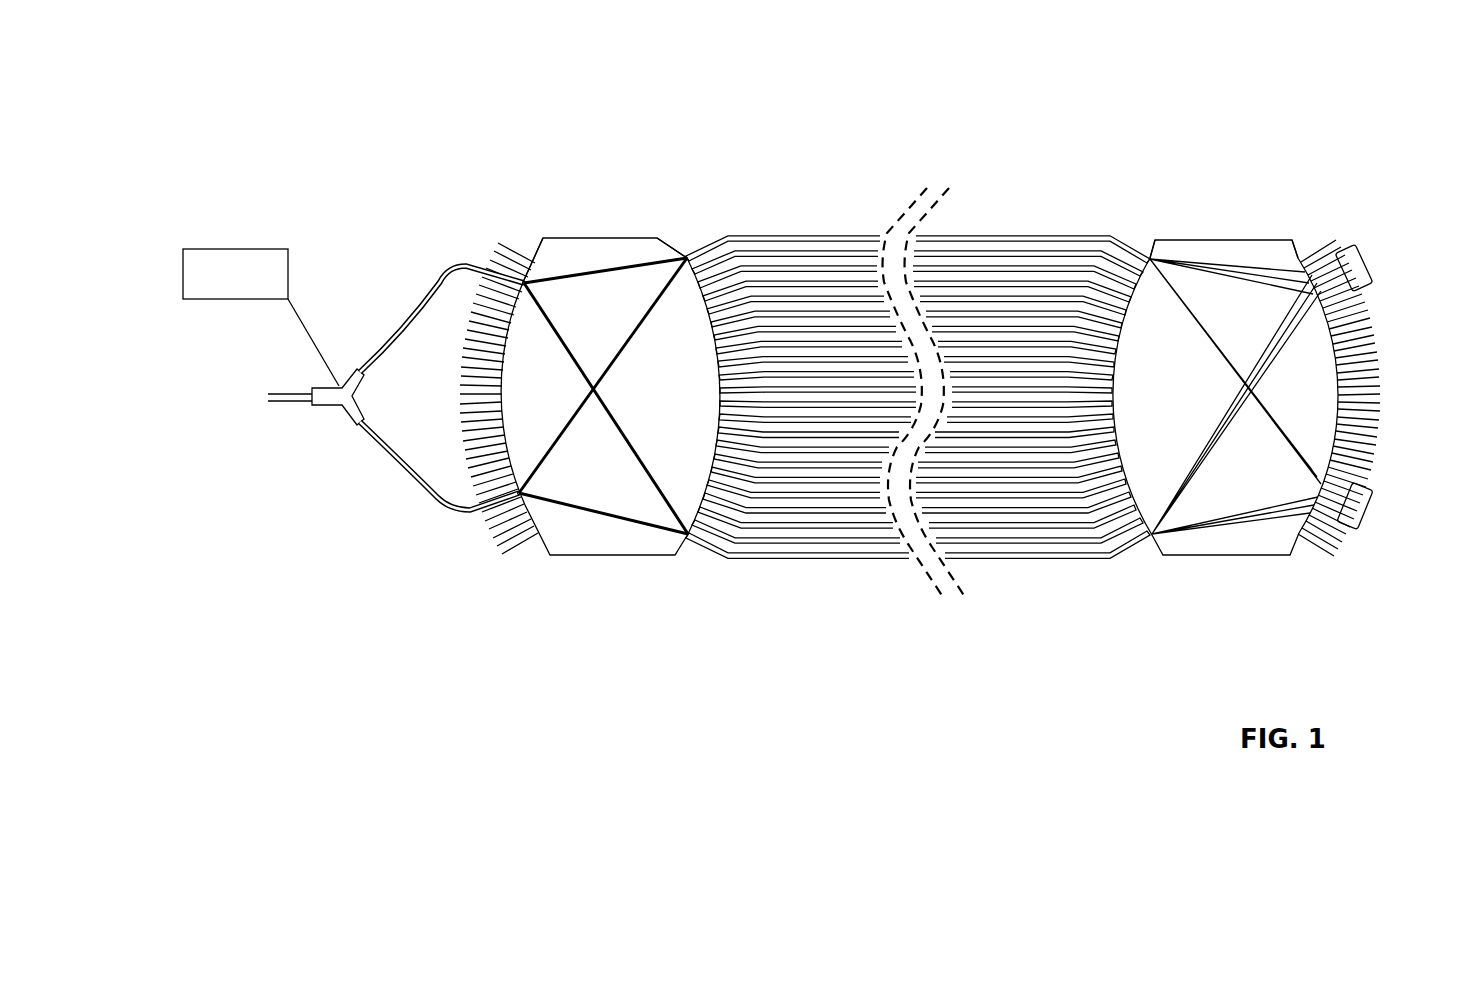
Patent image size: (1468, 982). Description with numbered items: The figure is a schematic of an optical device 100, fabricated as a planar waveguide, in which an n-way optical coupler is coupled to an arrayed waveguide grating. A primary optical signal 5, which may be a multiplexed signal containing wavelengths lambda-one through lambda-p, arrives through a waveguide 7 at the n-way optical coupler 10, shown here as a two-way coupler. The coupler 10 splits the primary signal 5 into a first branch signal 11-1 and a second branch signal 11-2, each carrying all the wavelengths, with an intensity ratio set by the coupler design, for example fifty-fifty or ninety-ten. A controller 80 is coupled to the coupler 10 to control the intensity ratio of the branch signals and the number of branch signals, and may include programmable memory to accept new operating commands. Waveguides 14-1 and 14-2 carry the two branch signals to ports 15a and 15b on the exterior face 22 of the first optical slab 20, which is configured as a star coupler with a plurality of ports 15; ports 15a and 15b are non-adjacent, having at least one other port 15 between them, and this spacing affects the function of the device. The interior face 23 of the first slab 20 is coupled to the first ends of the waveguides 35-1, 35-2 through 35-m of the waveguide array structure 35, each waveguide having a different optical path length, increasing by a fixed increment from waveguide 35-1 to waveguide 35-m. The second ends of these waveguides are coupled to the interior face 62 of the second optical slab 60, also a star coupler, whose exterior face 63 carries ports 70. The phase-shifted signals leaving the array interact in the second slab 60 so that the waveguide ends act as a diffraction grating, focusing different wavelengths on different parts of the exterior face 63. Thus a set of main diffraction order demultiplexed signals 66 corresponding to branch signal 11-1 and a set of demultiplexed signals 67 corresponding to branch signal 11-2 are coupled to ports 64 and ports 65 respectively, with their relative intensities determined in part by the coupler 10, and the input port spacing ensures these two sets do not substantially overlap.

The optical device 100 is at (456, 106).
The controller 80 is at (202, 246).
The primary optical signal 5 is at (301, 380).
The waveguide 7 is at (270, 400).
The n-way optical coupler 10 is at (320, 407).
The first branch signal 11-1 is at (402, 296).
The second branch signal 11-2 is at (373, 445).
The first waveguide 14-1 is at (449, 263).
The second waveguide 14-2 is at (452, 516).
The ports 15 is at (452, 338).
The first port 15a is at (521, 292).
The second port 15b is at (518, 485).
The first optical slab 20 is at (607, 590).
The exterior face 22 is at (546, 242).
The interior face 23 is at (671, 249).
The waveguide array structure 35 is at (918, 429).
The first waveguide of the array 35-1 is at (769, 236).
The second waveguide of the array 35-2 is at (811, 251).
The m-th waveguide of the array 35-m is at (766, 562).
The second optical slab 60 is at (1226, 590).
The interior face 62 is at (1159, 247).
The exterior face 63 is at (1287, 248).
The ports 64-1 to 64-p 64 is at (1367, 270).
The ports 65-1 to 65-p 65 is at (1369, 516).
The demultiplexed signals 66-1 to 66-p 66 is at (1241, 270).
The demultiplexed signals 67-1 to 67-p 67 is at (1268, 428).
The ports 70 is at (1376, 331).